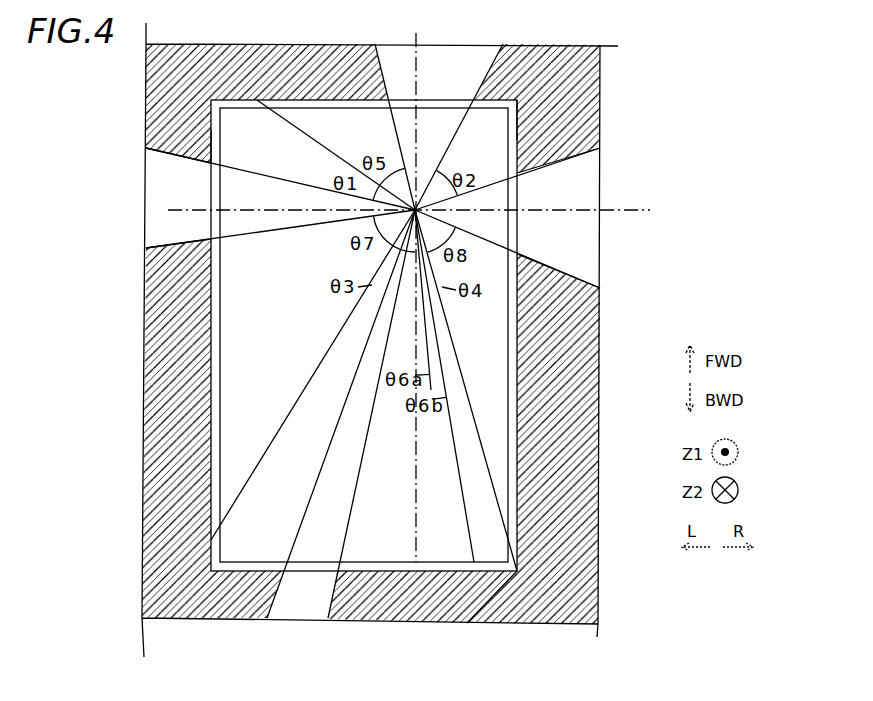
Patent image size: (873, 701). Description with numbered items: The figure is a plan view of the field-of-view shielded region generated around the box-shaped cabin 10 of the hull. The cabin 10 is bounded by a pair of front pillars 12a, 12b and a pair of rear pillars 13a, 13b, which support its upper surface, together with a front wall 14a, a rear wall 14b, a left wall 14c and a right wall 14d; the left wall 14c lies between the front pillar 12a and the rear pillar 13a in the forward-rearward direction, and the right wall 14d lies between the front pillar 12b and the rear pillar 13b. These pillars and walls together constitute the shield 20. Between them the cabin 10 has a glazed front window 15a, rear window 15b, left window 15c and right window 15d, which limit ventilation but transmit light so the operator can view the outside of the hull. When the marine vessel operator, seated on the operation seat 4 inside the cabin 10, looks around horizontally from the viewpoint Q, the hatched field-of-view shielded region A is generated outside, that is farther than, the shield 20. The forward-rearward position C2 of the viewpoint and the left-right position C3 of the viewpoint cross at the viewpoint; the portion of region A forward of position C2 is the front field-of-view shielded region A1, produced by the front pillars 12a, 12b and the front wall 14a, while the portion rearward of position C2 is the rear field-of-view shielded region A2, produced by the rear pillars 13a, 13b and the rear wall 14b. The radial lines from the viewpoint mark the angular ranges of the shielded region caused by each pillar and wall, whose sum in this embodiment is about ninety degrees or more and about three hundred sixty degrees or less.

The cabin 10 is at (331, 100).
The operation seat 4 is at (416, 206).
The front pillar 12a is at (226, 138).
The front pillar 12b is at (503, 108).
The rear pillar 13a is at (266, 562).
The rear pillar 13b is at (496, 562).
The front wall 14a is at (336, 155).
The shield 20 is at (310, 105).
The rear wall 14b is at (462, 562).
The left wall 14c is at (221, 282).
The right wall 14d is at (508, 314).
The front window 15a is at (426, 100).
The rear window 15b is at (325, 572).
The left window 15c is at (212, 197).
The right window 15d is at (518, 202).
The field-of-view shielded region A is at (215, 37).
The front field-of-view shielded region A1 is at (373, 108).
The rear field-of-view shielded region A2 is at (368, 617).
The position of the marine vessel operator's viewpoint in the forward-rearward direc C2 is at (423, 210).
The position of the marine vessel operator's viewpoint in the left-right direction C3 is at (415, 283).